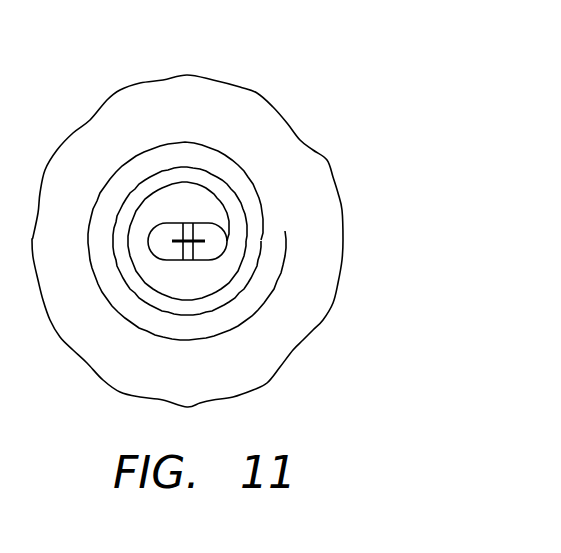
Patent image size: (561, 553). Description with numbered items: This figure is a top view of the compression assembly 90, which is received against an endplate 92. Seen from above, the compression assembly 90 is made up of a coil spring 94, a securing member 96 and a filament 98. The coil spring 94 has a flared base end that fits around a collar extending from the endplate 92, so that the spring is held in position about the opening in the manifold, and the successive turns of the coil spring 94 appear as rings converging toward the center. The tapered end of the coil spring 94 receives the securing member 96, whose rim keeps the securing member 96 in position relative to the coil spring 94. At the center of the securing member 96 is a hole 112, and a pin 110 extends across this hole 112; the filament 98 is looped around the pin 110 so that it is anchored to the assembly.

The compression assembly 90 is at (192, 206).
The endplate 92 is at (73, 237).
The coil spring 94 is at (153, 170).
The securing member 96 is at (197, 180).
The filament 98 is at (212, 237).
The pin 110 is at (199, 242).
The hole 112 is at (147, 247).